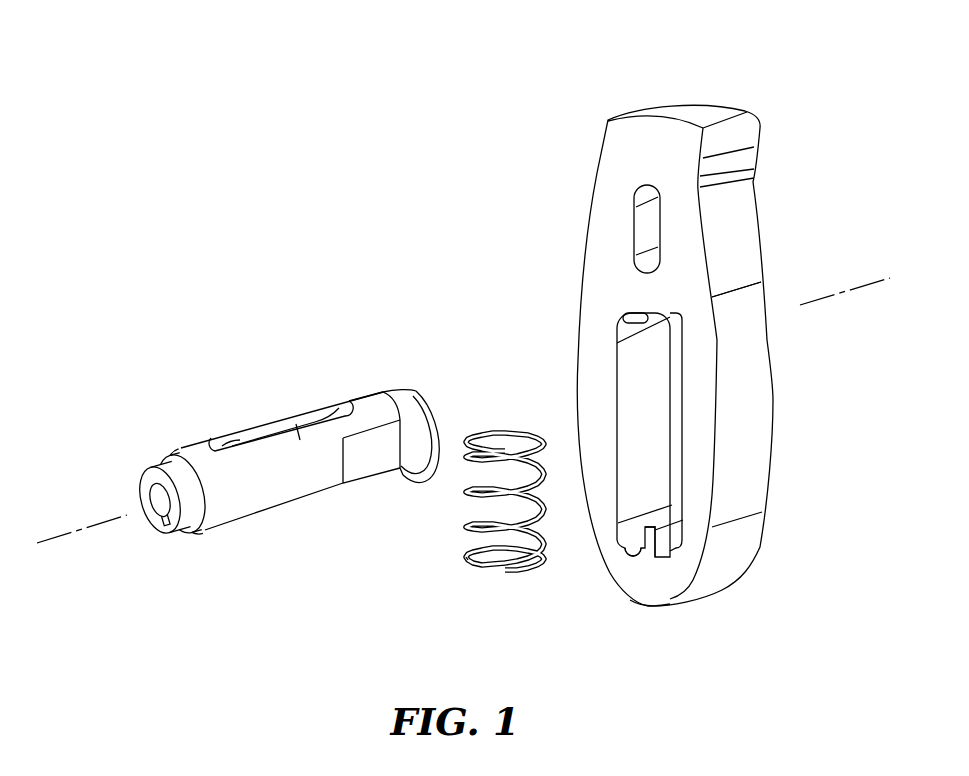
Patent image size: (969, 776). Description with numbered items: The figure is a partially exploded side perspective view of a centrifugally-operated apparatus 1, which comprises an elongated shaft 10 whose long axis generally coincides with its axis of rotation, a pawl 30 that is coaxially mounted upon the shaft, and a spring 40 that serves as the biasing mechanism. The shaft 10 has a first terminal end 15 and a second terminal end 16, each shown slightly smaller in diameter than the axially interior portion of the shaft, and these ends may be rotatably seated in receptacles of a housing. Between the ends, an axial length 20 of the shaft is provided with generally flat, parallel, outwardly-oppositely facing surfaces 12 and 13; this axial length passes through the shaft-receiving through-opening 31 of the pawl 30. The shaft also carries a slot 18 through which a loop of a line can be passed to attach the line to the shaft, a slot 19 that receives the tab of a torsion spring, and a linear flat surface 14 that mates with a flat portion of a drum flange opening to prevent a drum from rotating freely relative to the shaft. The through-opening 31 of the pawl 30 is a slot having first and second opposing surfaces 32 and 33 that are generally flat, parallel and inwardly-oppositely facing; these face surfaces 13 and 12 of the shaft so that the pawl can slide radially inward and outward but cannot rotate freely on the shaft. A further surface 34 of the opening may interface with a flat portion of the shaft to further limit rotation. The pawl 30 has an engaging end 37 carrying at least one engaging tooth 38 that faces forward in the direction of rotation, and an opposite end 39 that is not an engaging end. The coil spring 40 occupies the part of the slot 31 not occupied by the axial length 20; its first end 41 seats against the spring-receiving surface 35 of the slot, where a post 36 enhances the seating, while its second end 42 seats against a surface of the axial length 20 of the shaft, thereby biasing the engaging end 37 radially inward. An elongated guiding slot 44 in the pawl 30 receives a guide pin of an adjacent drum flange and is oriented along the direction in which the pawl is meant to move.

The centrifugally-operated apparatus 1 is at (333, 82).
The elongated shaft 10 is at (291, 375).
The flat surface of axial length 12 is at (372, 454).
The flat surface of axial length 13 is at (348, 395).
The linear flat surface of shaft 14 is at (265, 494).
The first terminal end of shaft 15 is at (432, 422).
The second terminal end of shaft 16 is at (152, 480).
The slot in shaft 18 is at (268, 443).
The slot of shaft 19 is at (160, 527).
The axial length of shaft 20 is at (374, 410).
The pawl 30 is at (611, 107).
The shaft-receiving through-opening 31 is at (674, 349).
The first opposing surface of slot 32 is at (636, 367).
The second opposing surface of slot 33 is at (675, 394).
The surface of through-opening 34 is at (622, 318).
The spring-receiving surface 35 is at (636, 556).
The post 36 is at (655, 537).
The engaging end 37 is at (667, 112).
The engaging tooth 38 is at (748, 128).
The opposite end 39 is at (648, 607).
The spring 40 is at (471, 593).
The first end of spring 41 is at (503, 572).
The second end of spring 42 is at (502, 440).
The guiding slot 44 is at (647, 230).